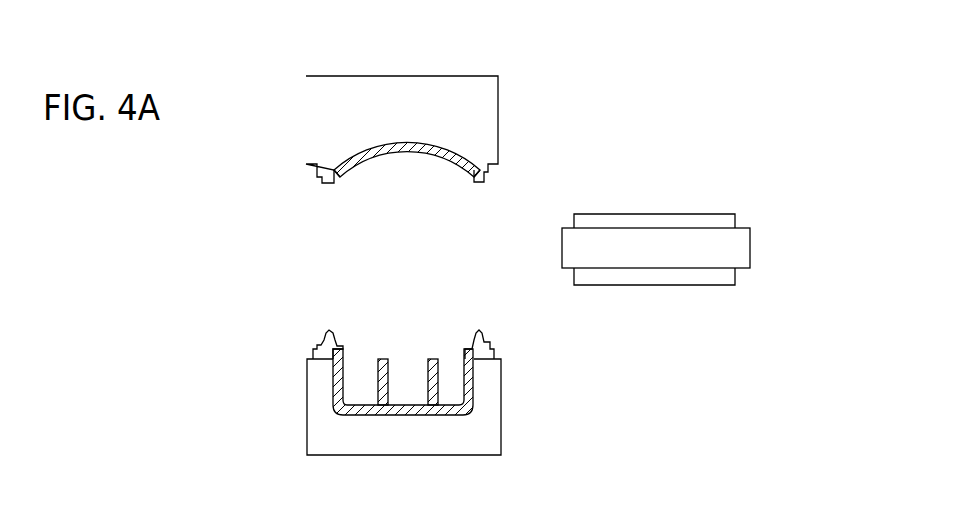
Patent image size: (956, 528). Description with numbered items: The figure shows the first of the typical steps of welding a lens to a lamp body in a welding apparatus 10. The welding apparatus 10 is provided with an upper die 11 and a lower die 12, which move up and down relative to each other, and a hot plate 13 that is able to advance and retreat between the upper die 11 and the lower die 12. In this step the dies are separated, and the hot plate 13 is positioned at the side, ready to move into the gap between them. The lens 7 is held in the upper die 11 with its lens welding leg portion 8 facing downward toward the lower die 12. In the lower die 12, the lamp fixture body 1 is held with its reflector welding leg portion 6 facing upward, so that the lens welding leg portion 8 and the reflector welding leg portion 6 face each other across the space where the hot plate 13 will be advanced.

The lamp fixture body 1 is at (387, 378).
The reflector welding leg portion 6 is at (478, 335).
The lens 7 is at (427, 151).
The lens welding leg portion 8 is at (327, 183).
The welding apparatus 10 is at (569, 109).
The upper die 11 is at (388, 83).
The lower die 12 is at (452, 435).
The hot plate 13 is at (658, 253).